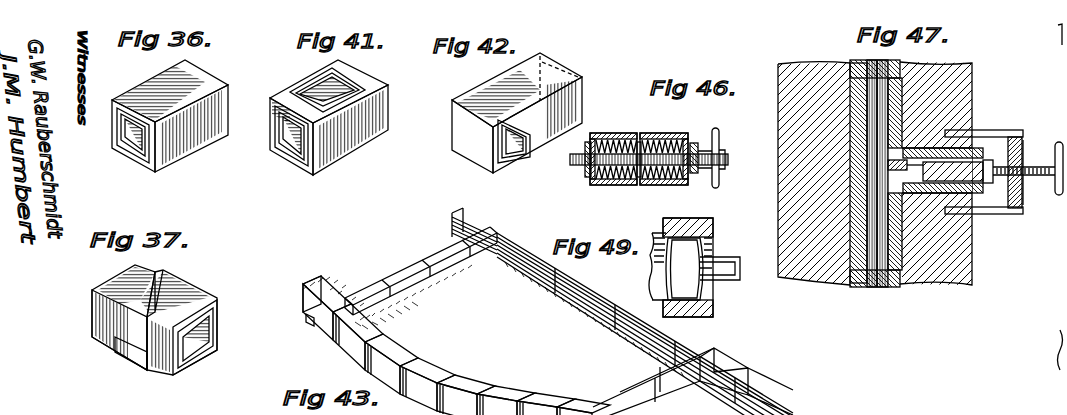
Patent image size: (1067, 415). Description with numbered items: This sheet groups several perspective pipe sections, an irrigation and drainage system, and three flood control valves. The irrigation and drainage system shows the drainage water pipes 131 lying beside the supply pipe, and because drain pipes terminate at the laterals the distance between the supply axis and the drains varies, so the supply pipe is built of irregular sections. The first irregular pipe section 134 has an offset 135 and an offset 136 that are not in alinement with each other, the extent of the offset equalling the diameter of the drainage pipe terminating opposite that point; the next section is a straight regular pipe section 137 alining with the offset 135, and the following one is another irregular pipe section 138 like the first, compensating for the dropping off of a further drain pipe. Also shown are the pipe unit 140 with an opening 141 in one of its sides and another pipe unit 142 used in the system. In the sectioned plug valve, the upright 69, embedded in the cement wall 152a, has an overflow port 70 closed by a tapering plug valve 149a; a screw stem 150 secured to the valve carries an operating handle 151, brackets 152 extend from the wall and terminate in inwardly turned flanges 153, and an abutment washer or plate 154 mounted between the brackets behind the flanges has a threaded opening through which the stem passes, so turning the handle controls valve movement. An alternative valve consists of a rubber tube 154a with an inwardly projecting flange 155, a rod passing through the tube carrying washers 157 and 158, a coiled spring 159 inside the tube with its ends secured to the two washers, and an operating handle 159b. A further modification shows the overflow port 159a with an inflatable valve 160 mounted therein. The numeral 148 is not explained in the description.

In FIG. 36, the straight regular pipe section 137 is at (186, 150).
In FIG. 43, the straight regular pipe section 137 is at (490, 395).
In FIG. 41, the pipe unit 140 is at (340, 160).
In FIG. 41, the opening 141 is at (353, 110).
In FIG. 42, the pipe unit 142 is at (473, 92).
In FIG. 37, the first irregular pipe section 134 is at (200, 297).
In FIG. 43, the first irregular pipe section 134 is at (522, 408).
In FIG. 37, the offset 135 is at (113, 343).
In FIG. 37, the offset 136 is at (192, 287).
In FIG. 46, the inwardly projecting flange 155 is at (605, 185).
In FIG. 46, the coiled spring 159 is at (636, 133).
In FIG. 46, the operating handle 159b is at (735, 118).
In FIG. 46, the washer 158 is at (585, 172).
In FIG. 46, the rubber tube 154a is at (658, 185).
In FIG. 46, the washer 157 is at (699, 183).
In FIG. 46, the screw stem 150 is at (727, 168).
In FIG. 47, the screw stem 150 is at (1042, 150).
In FIG. 47, the overflow port 70 is at (907, 184).
In FIG. 47, the brackets 152 is at (1000, 215).
In FIG. 47, the abutment washer or plate 154 is at (1000, 140).
In FIG. 47, the inwardly turned flanges 153 is at (1023, 135).
In FIG. 47, the operating handle 151 is at (1040, 135).
In FIG. 47, the upright 69 is at (845, 275).
In FIG. 47, the cement wall 152a is at (917, 281).
In FIG. 47, the tapering plug valve 149a is at (935, 213).
In FIG. 47, the frame 148 is at (1048, 335).
In FIG. 43, the drainage water pipes 131 is at (790, 408).
In FIG. 43, the irregular pipe section 138 is at (450, 377).
In FIG. 49, the inflatable valve 160 is at (673, 268).
In FIG. 49, the overflow port 159a is at (713, 305).